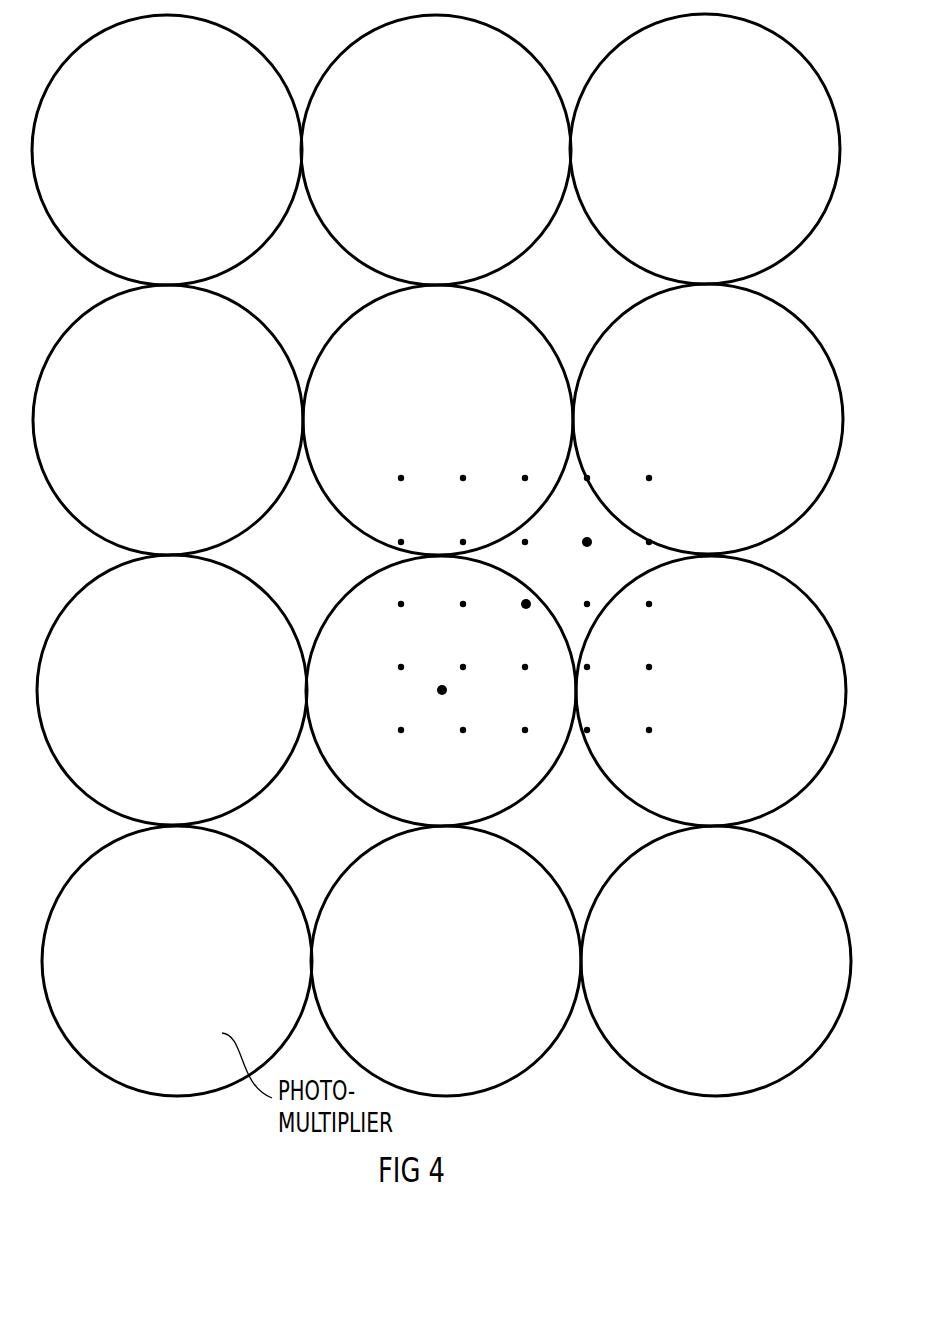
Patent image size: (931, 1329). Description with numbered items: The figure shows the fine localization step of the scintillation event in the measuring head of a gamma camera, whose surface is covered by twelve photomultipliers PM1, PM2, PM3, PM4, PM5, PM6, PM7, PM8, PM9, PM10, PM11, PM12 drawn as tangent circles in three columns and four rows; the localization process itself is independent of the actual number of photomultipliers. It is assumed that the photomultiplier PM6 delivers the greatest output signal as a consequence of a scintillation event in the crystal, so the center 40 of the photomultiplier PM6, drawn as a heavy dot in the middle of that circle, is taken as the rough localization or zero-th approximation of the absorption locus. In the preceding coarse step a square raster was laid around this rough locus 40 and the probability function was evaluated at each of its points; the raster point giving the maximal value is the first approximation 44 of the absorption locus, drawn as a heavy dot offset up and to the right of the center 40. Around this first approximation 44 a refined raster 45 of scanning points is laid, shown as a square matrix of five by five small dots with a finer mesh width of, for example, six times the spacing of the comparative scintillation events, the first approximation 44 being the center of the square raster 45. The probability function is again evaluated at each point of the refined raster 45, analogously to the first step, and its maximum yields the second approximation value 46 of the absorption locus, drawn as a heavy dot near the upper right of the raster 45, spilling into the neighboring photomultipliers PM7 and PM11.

The photomultiplier PM1 is at (218, 1093).
The photomultiplier PM2 is at (270, 785).
The photomultiplier PM3 is at (70, 513).
The photomultiplier PM4 is at (262, 243).
The photomultiplier PM5 is at (513, 1080).
The photomultiplier PM6 is at (537, 783).
The photomultiplier PM7 is at (335, 510).
The photomultiplier PM8 is at (535, 243).
The photomultiplier PM9 is at (758, 1092).
The photomultiplier PM10 is at (805, 785).
The photomultiplier PM11 is at (807, 513).
The photomultiplier PM12 is at (803, 243).
The center of the photomultiplier 40 is at (447, 691).
The first approximation of the absorption locus 44 is at (523, 604).
The refined raster 45 is at (452, 468).
The second approximation value 46 is at (587, 547).